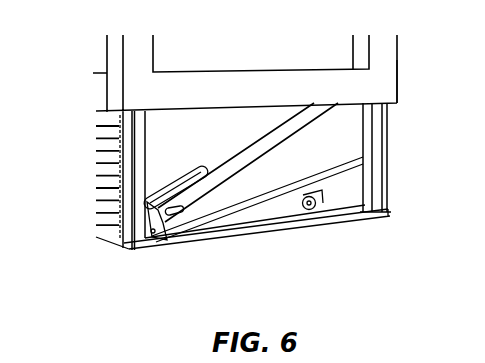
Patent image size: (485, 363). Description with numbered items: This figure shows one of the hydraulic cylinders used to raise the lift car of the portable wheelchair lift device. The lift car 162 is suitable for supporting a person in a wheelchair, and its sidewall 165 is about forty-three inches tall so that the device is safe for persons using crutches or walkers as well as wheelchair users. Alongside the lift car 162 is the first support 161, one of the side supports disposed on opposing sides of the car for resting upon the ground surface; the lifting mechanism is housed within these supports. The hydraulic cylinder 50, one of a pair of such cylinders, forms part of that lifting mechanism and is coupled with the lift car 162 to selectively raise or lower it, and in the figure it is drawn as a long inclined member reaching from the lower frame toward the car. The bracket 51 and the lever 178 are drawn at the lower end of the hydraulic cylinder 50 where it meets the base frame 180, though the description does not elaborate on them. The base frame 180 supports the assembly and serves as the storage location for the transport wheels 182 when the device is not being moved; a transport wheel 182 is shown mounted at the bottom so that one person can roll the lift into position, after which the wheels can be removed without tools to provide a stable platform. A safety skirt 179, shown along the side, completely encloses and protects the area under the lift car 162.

The sidewall 165 is at (207, 80).
The lift car 162 is at (396, 84).
The first support 161 is at (381, 136).
The safety skirt 179 is at (103, 200).
The base frame 180 is at (248, 236).
The hydraulic cylinder 50 is at (257, 156).
The mounting bracket 51 is at (165, 196).
The lever 178 is at (205, 166).
The transport wheel 182 is at (311, 211).